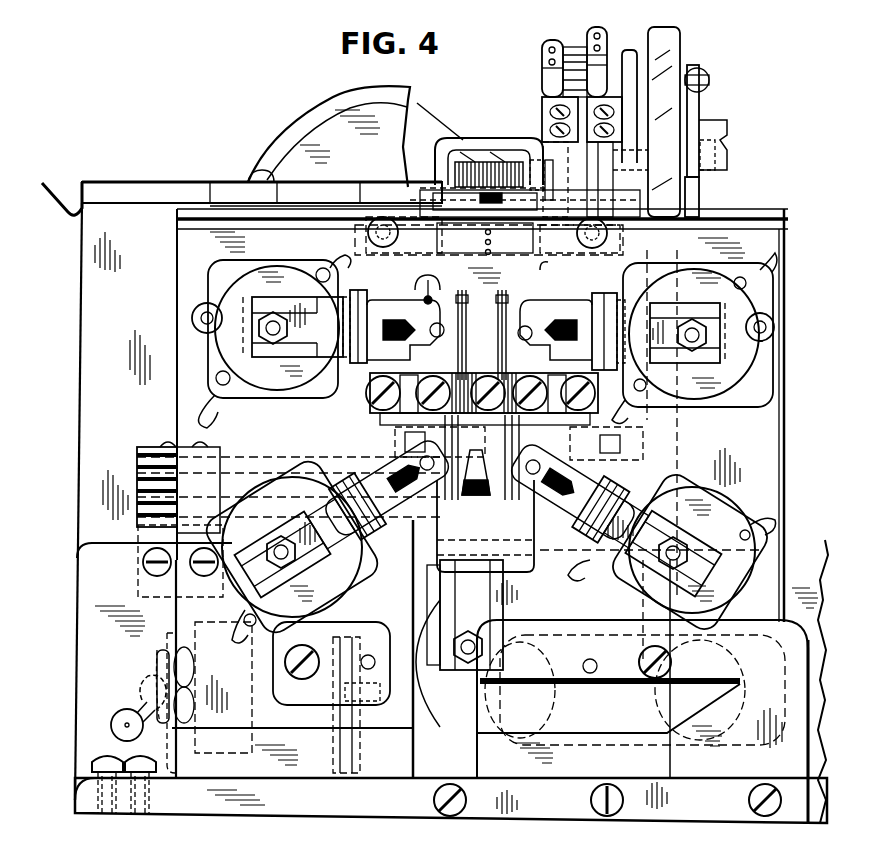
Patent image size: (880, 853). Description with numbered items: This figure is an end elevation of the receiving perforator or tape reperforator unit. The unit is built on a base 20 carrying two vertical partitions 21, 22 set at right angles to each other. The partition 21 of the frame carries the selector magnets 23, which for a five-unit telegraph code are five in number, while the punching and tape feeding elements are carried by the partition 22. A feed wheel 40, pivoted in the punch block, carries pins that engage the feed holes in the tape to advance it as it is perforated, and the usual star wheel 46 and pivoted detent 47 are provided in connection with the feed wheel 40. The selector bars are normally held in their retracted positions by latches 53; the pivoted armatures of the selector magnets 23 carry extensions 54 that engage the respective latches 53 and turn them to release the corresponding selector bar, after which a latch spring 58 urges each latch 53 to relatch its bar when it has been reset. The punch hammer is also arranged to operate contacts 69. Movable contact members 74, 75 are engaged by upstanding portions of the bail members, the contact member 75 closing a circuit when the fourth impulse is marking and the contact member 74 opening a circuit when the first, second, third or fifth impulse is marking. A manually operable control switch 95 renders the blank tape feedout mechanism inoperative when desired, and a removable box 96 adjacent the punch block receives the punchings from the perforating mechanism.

The base 20 is at (335, 808).
The vertical partition 21 is at (80, 602).
The vertical partition 22 is at (672, 458).
The selector magnet 23 is at (273, 390).
The feed wheel 40 is at (525, 255).
The star wheel 46 is at (699, 199).
The pivoted detent 47 is at (708, 107).
The latch 53 is at (498, 368).
The armature extension 54 is at (500, 322).
The latch spring 58 is at (475, 290).
The contacts 69 is at (143, 480).
The movable contact member 74 is at (603, 30).
The movable contact member 75 is at (557, 40).
The manually operable control switch 95 is at (141, 700).
The removable box 96 is at (81, 304).